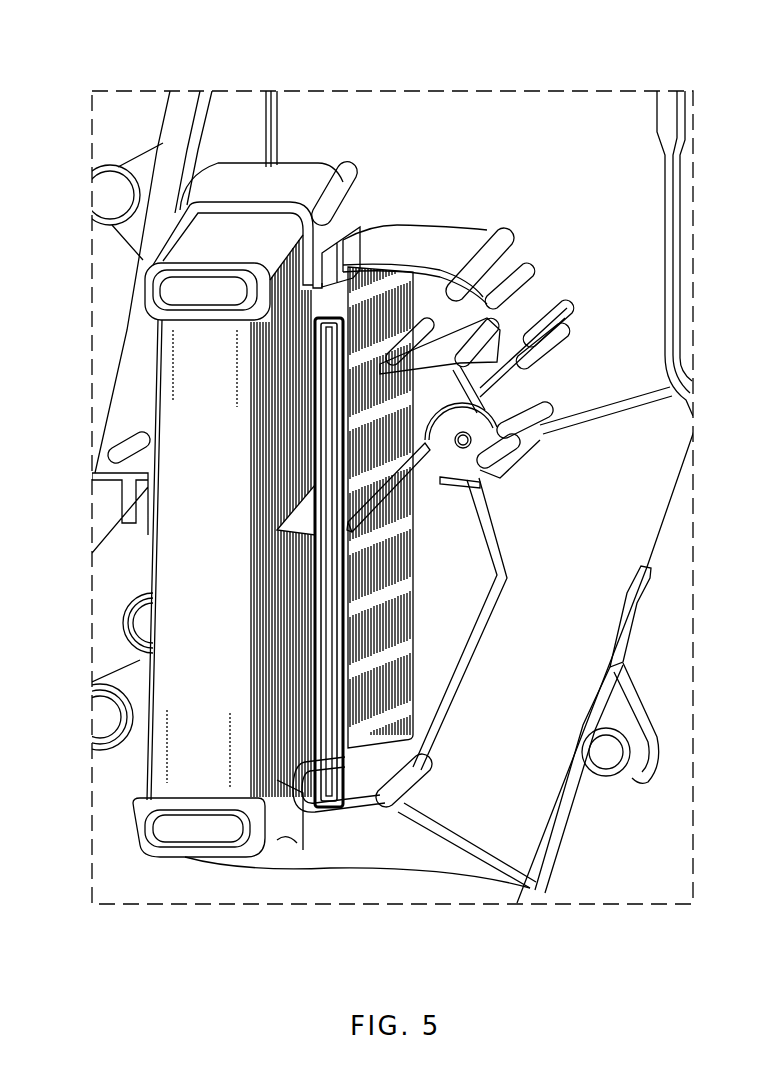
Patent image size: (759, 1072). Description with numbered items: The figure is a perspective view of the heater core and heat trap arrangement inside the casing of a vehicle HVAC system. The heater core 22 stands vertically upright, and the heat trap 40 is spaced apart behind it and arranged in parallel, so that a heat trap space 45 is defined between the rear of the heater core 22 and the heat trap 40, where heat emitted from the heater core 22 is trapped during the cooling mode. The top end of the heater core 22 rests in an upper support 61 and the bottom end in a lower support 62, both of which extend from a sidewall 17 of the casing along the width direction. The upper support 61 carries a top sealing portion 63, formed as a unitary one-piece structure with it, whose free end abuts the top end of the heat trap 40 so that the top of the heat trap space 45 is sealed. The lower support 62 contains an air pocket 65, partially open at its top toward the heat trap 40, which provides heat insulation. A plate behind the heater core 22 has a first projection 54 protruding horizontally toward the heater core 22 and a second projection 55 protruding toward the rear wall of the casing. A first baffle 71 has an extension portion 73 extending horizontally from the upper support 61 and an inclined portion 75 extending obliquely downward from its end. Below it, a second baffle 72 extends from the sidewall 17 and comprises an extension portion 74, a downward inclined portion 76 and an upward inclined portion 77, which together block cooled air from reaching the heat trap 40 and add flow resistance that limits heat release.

The sidewall 17 is at (465, 108).
The heater core 22 is at (187, 750).
The heat trap 40 is at (406, 583).
The heat trap space 45 is at (300, 606).
The first projection 54 is at (303, 508).
The second projection 55 is at (380, 490).
The upper support 61 is at (298, 170).
The lower support 62 is at (278, 860).
The top sealing portion 63 is at (343, 277).
The air pocket 65 is at (287, 840).
The first baffle 71 is at (480, 213).
The second baffle 72 is at (573, 330).
The extension portion 73 is at (428, 233).
The extension portion 74 is at (507, 306).
The inclined portion 75 is at (507, 253).
The downward inclined portion 76 is at (533, 303).
The upward inclined portion 77 is at (530, 378).